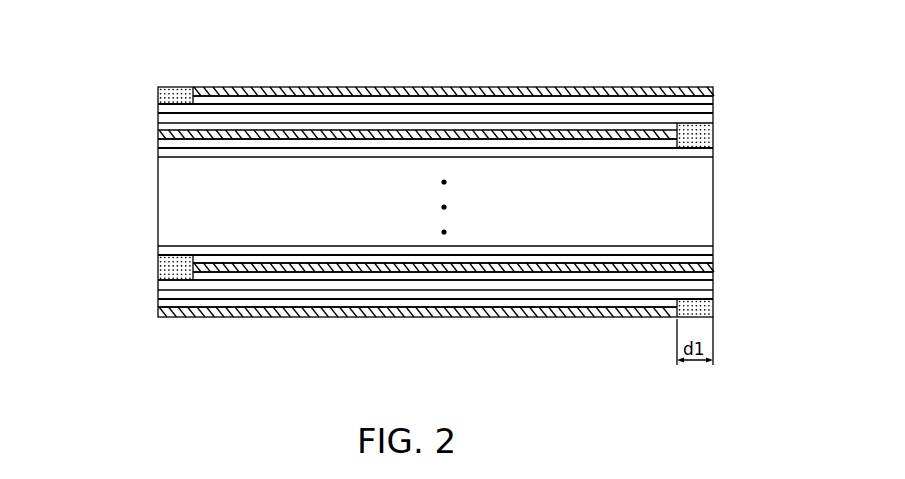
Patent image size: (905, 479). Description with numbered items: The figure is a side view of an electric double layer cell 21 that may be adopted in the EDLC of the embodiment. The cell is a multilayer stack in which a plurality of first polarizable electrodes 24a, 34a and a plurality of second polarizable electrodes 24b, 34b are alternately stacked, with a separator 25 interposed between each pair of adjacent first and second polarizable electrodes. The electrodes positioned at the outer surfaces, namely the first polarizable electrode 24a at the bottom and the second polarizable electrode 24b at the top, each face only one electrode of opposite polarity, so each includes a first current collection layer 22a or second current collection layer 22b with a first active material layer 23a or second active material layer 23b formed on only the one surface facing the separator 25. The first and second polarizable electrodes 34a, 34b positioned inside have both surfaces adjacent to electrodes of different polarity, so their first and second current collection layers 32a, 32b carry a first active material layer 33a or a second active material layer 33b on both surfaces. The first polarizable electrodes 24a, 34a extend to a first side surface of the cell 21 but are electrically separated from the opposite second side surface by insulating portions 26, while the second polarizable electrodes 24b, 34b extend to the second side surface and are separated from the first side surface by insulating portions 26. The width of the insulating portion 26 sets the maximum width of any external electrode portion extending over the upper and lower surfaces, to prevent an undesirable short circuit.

The electric double layer cell 21 is at (271, 73).
The first current collection layer 22a is at (158, 310).
The second current collection layer 22b is at (712, 92).
The first active material layer 23a is at (158, 302).
The second active material layer 23b is at (712, 100).
The first polarizable electrode 24a is at (80, 297).
The second polarizable electrode 24b is at (788, 48).
The separator 25 is at (158, 292).
The insulating portion 26 is at (712, 308).
The first current collection layer 32a is at (158, 135).
The second current collection layer 32b is at (712, 268).
The first active material layer 33a is at (158, 147).
The second active material layer 33b is at (712, 280).
The first polarizable electrode 34a is at (82, 102).
The second polarizable electrode 34b is at (782, 233).